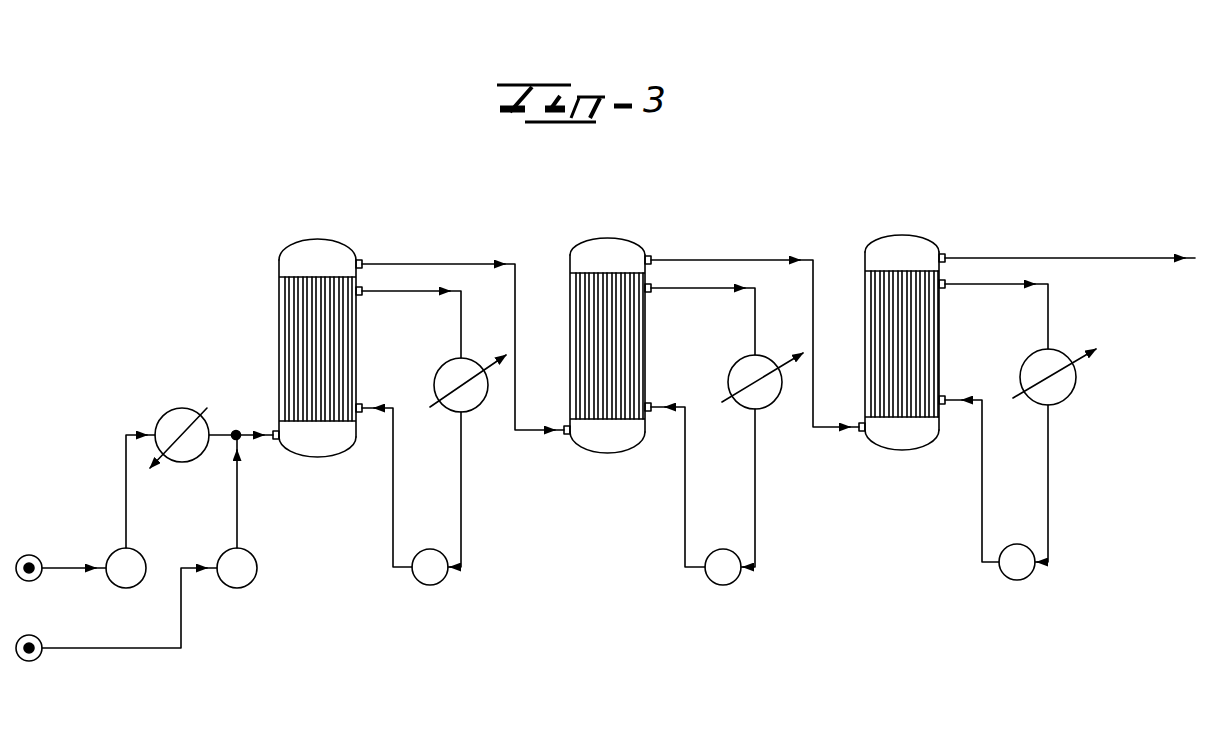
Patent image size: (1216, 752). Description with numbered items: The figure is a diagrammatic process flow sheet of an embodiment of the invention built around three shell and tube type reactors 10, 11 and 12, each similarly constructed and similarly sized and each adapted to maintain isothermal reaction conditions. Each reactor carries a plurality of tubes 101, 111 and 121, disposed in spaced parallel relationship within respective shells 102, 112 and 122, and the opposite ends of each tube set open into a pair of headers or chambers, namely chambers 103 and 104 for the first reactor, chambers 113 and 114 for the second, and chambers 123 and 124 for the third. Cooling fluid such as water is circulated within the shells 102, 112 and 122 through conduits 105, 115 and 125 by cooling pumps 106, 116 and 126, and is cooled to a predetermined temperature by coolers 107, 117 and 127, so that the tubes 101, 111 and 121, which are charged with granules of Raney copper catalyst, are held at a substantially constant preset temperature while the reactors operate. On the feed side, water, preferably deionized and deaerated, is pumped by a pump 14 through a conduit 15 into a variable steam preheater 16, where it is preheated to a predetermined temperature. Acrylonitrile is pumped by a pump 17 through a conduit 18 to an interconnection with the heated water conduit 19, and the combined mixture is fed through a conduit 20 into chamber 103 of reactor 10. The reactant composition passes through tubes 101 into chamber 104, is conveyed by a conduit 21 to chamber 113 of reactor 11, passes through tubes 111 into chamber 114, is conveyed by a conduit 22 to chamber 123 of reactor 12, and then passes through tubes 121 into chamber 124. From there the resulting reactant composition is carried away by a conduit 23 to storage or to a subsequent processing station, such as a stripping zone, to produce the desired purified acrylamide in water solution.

The shell and tube reactor 10 is at (309, 321).
The shell and tube reactor 11 is at (642, 328).
The shell and tube reactor 12 is at (936, 341).
The pump 14 is at (121, 588).
The conduit 15 is at (126, 494).
The variable steam preheater 16 is at (167, 403).
The pump 17 is at (240, 582).
The conduit 18 is at (237, 512).
The heated water conduit 19 is at (216, 442).
The conduit 20 is at (247, 433).
The conduit 21 is at (426, 270).
The conduit 22 is at (752, 256).
The conduit 23 is at (1003, 255).
The tubes 101 is at (308, 328).
The shell 102 is at (279, 355).
The header or chamber 103 is at (320, 440).
The header or chamber 104 is at (307, 242).
The conduit 105 is at (463, 500).
The cooling pump 106 is at (430, 585).
The cooler 107 is at (444, 366).
The tubes 111 is at (620, 340).
The shell 112 is at (645, 363).
The header or chamber 113 is at (600, 444).
The header or chamber 114 is at (594, 248).
The conduit 115 is at (755, 462).
The cooling pump 116 is at (725, 585).
The cooler 117 is at (766, 394).
The tubes 121 is at (913, 333).
The shell 122 is at (942, 353).
The header or chamber 123 is at (897, 440).
The header or chamber 124 is at (895, 218).
The conduit 125 is at (1050, 479).
The cooling pump 126 is at (1016, 580).
The cooler 127 is at (1062, 387).